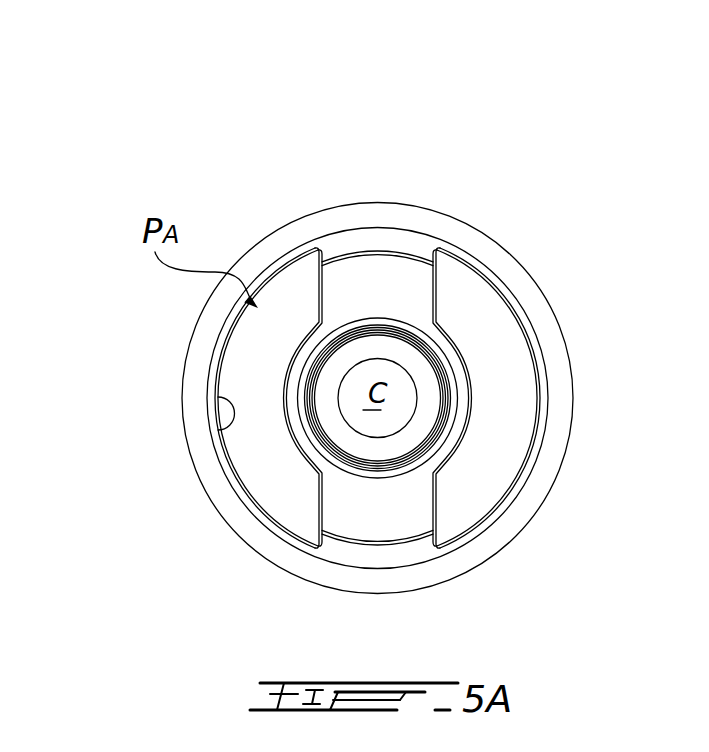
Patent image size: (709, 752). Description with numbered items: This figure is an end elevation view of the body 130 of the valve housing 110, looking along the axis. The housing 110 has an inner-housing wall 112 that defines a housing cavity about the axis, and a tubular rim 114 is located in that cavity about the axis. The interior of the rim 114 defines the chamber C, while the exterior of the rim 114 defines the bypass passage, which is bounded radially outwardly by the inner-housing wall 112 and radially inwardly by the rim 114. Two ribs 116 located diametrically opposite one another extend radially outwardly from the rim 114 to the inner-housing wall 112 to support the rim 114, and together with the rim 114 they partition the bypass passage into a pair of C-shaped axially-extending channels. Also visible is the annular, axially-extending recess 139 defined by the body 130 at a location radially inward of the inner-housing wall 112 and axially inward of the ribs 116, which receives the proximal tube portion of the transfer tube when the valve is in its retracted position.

The housing 110 is at (445, 325).
The body 130 is at (377, 398).
The inner-housing wall 112 is at (217, 417).
The tubular rim 114 is at (460, 412).
The ribs 116 is at (415, 297).
The recess 139 is at (382, 248).